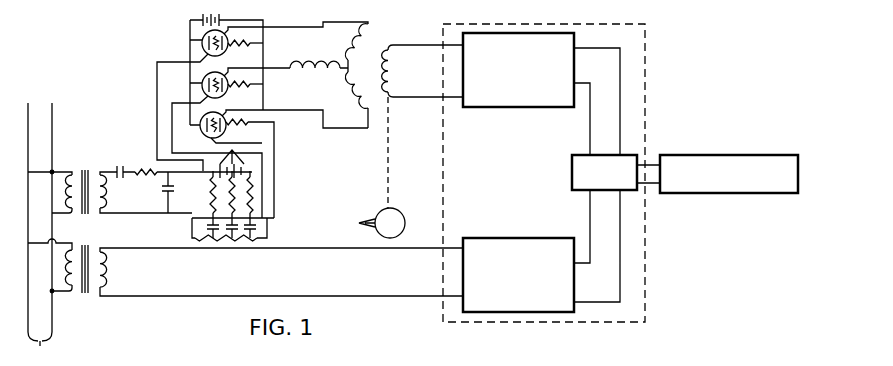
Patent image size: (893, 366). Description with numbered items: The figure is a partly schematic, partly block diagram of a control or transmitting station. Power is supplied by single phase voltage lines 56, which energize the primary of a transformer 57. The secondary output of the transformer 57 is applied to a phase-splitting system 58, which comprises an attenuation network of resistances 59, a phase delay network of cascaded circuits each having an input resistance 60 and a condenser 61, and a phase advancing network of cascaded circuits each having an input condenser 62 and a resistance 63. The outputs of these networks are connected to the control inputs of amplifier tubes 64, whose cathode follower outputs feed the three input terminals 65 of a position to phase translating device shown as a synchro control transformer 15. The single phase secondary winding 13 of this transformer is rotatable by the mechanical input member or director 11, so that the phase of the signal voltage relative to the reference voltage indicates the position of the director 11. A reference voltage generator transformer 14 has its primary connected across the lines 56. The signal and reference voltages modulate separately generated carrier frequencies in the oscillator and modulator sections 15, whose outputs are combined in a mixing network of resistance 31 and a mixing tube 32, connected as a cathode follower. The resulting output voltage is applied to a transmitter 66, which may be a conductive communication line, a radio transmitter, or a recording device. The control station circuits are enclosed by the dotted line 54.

The director member 11 is at (400, 214).
The single phase secondary winding 13 is at (396, 63).
The transformer 14 is at (88, 300).
The oscillator-modulator section 15 is at (376, 44).
The mixing network of resistance 31 is at (586, 174).
The mixing tube 32 is at (572, 174).
The dotted line 54 is at (640, 307).
The single phase voltage lines 56 is at (40, 231).
The transformer 57 is at (92, 158).
The phase-splitting system 58 is at (259, 200).
The resistances 59 is at (213, 190).
The input resistance 60 is at (243, 241).
The condenser 61 is at (259, 236).
The input condenser 62 is at (232, 150).
The resistance 63 is at (272, 186).
The amplifier tubes 64 is at (190, 40).
The input terminals 65 is at (293, 65).
The transmitter 66 is at (744, 155).